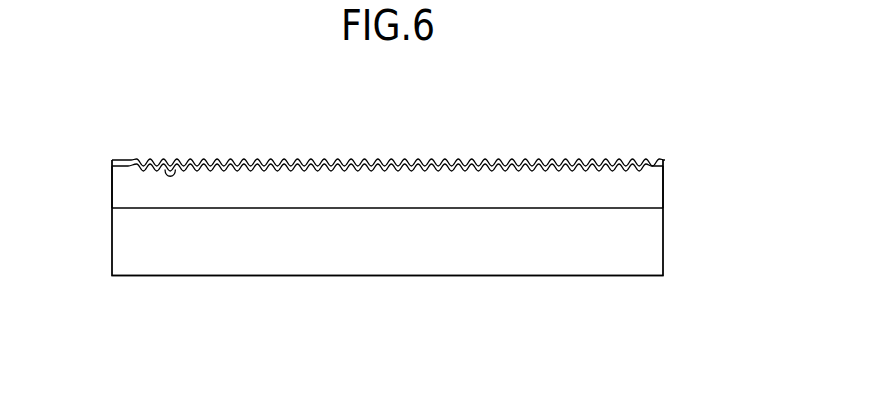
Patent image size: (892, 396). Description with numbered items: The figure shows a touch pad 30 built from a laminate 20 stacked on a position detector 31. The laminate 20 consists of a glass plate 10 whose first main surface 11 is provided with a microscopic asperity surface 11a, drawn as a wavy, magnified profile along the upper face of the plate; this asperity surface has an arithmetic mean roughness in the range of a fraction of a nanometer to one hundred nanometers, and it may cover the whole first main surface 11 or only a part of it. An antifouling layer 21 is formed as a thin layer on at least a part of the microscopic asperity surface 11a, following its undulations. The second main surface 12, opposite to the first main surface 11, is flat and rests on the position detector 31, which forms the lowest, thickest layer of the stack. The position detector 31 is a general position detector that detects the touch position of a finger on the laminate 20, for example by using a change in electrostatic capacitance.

The glass plate 10 is at (653, 184).
The first main surface 11 is at (122, 166).
The microscopic asperity surface 11a is at (174, 169).
The second main surface 12 is at (123, 208).
The laminate 20 is at (713, 140).
The antifouling layer 21 is at (658, 160).
The touch pad 30 is at (752, 152).
The position detector 31 is at (653, 240).